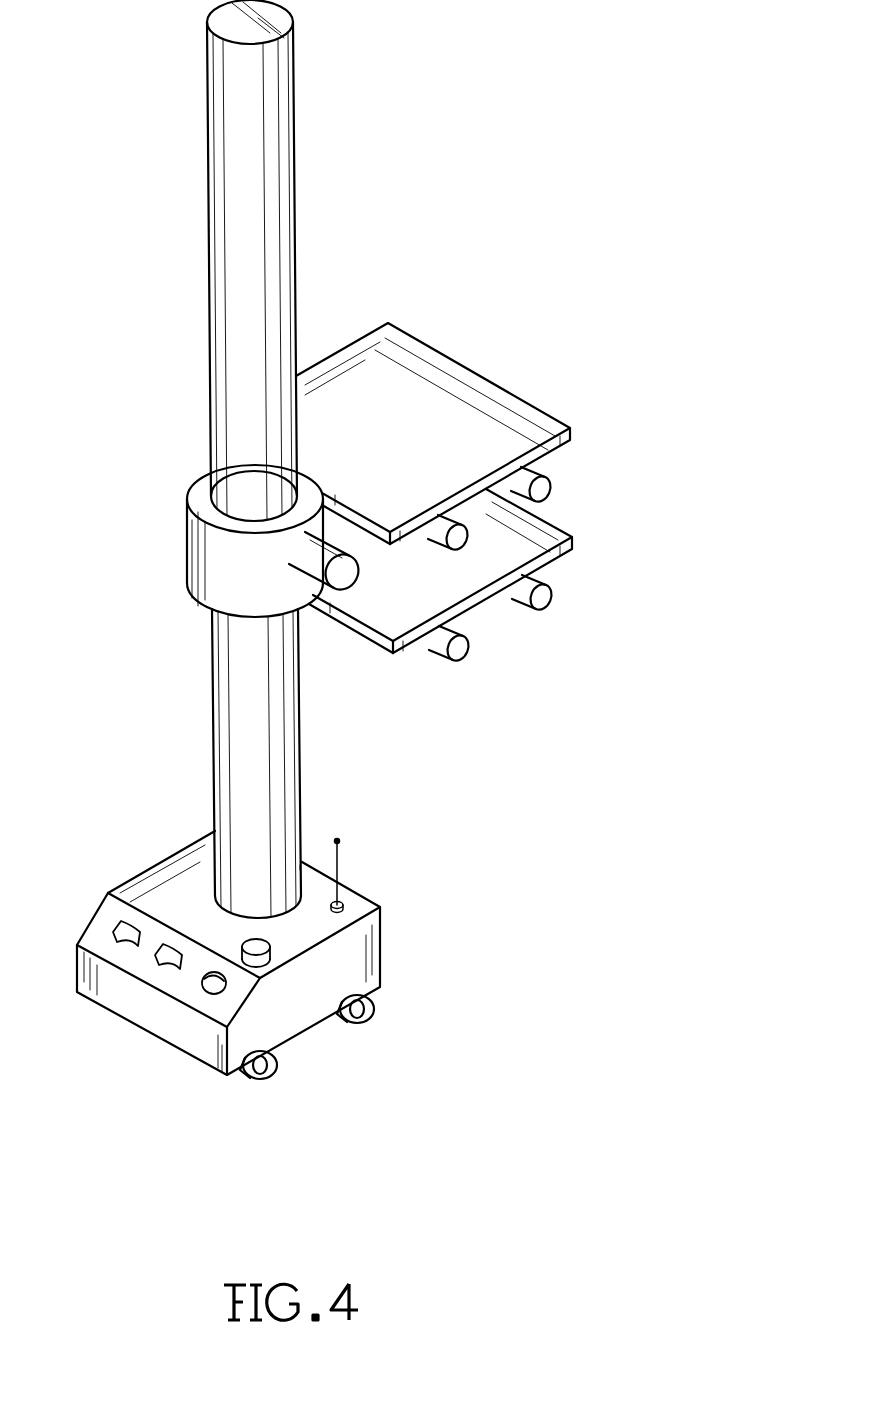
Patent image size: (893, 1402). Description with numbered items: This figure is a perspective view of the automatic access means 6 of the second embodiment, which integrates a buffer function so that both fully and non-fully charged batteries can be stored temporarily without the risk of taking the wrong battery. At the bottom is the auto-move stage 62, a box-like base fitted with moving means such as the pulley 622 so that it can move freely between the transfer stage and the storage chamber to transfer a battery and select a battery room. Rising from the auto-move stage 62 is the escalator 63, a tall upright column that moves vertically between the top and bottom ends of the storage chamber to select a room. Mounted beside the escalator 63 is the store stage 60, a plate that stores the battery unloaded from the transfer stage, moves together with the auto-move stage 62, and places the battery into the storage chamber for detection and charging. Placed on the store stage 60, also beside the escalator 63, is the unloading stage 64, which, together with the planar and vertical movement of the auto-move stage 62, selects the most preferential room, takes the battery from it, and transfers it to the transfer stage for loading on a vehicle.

The automatic access means 6 is at (369, 576).
The store stage 60 is at (558, 558).
The auto-move stage 62 is at (297, 1017).
The pulley 622 is at (272, 1070).
The escalator 63 is at (222, 717).
The unloading stage 64 is at (452, 378).